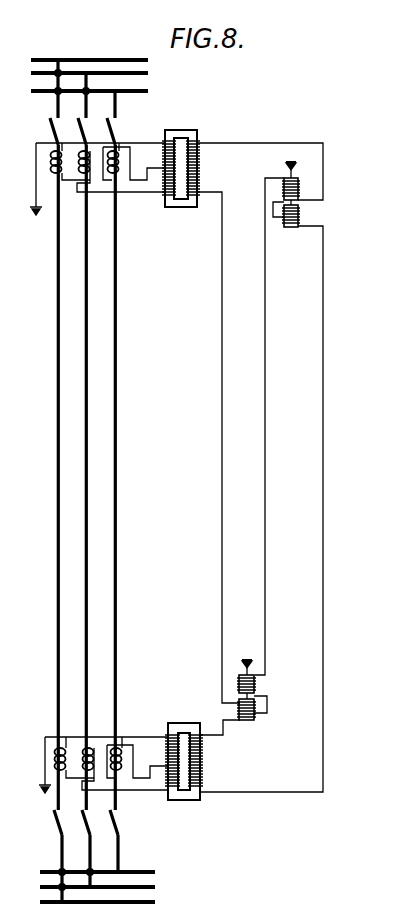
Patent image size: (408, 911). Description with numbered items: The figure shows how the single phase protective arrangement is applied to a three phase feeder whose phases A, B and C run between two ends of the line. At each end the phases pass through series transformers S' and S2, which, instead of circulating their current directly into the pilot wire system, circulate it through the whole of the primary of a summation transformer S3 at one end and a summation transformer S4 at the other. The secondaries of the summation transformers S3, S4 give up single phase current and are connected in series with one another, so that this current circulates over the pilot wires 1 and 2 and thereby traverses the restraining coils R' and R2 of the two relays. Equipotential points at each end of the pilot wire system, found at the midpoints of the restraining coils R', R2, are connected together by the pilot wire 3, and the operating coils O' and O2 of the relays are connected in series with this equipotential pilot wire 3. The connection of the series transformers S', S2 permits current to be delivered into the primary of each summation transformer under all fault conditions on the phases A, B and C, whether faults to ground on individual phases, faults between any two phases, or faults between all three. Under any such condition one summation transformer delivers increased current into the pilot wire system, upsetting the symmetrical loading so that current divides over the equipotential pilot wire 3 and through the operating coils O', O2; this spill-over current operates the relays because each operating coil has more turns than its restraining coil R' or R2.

The phase A is at (57, 320).
The phase B is at (87, 342).
The phase C is at (115, 360).
The series transformers S' is at (97, 161).
The series transformers S2 is at (119, 755).
The summation transformer S3 is at (190, 131).
The summation transformer S4 is at (196, 802).
The pilot wire 1 is at (222, 396).
The pilot wire 2 is at (323, 449).
The equipotential pilot wire 3 is at (265, 410).
The operating coil O' is at (323, 183).
The restraining coil R' is at (319, 215).
The operating coil O2 is at (256, 684).
The restraining coil R2 is at (252, 722).